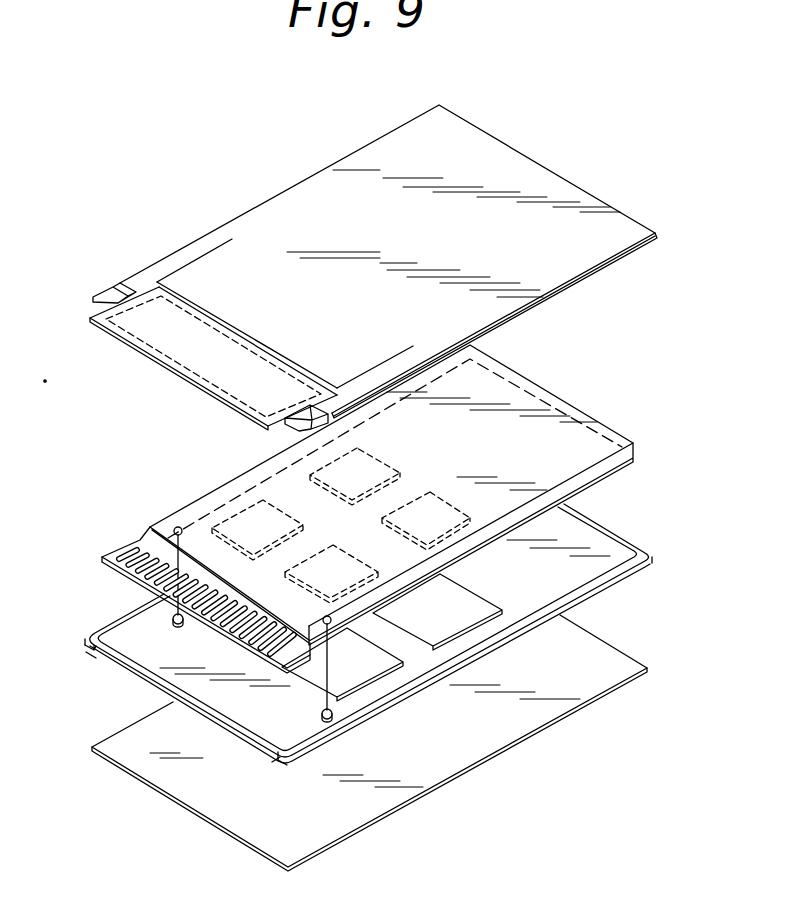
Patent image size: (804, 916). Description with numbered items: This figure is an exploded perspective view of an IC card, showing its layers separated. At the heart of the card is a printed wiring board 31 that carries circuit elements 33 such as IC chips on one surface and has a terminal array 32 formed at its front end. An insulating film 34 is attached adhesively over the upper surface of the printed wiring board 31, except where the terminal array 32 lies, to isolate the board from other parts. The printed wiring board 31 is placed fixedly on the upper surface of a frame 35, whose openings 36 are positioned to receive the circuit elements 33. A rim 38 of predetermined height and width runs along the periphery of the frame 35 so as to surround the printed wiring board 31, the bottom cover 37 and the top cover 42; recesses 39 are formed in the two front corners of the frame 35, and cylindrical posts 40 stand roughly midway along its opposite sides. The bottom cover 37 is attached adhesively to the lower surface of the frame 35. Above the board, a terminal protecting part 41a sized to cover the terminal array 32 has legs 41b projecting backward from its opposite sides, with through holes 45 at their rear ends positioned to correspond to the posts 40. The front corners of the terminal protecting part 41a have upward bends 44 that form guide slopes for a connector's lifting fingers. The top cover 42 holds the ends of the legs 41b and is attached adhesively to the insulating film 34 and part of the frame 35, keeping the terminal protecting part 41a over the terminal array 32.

The printed wiring board 31 is at (150, 543).
The terminal array 32 is at (112, 574).
The circuit elements 33 is at (442, 497).
The insulating film 34 is at (226, 486).
The frame 35 is at (198, 818).
The openings 36 is at (585, 565).
The bottom cover 37 is at (477, 598).
The rim 38 is at (612, 530).
The recesses 39 is at (87, 656).
The cylindrical posts 40 is at (82, 647).
The terminal protecting part 41a is at (178, 367).
The legs 41b is at (108, 295).
The top cover 42 is at (323, 168).
The upward bends 44 is at (572, 272).
The through holes 45 is at (207, 240).